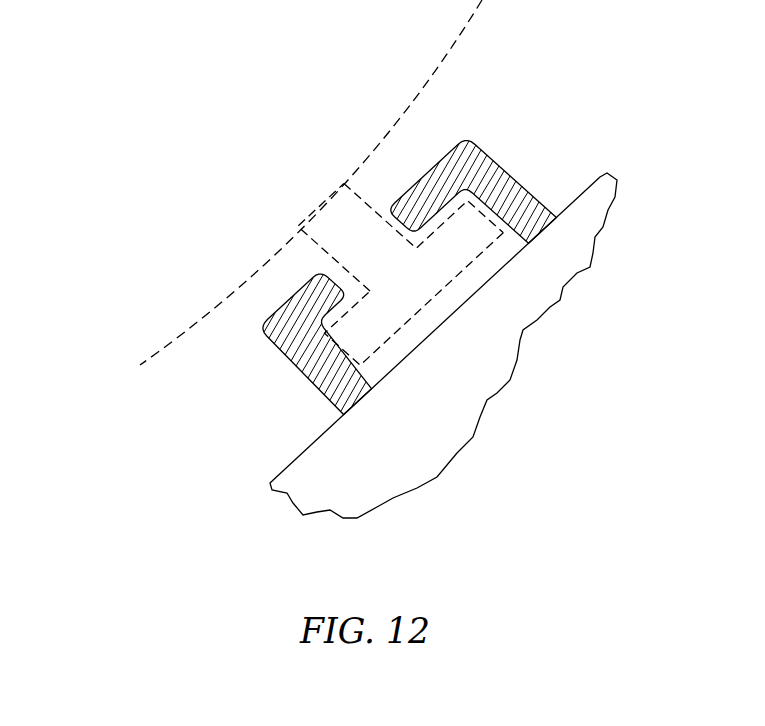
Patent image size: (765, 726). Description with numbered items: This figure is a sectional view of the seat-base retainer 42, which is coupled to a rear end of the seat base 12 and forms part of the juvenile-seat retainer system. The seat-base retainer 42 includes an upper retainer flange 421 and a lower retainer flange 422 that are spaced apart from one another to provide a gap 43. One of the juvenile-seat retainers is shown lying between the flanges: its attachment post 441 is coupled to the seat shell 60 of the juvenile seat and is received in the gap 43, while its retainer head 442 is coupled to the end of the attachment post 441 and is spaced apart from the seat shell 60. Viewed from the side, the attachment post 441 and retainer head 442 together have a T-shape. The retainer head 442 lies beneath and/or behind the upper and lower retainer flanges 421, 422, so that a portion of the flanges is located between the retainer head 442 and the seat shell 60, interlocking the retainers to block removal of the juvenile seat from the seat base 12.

The seat base 12 is at (425, 424).
The seat-base retainer 42 is at (535, 170).
The gap 43 is at (308, 259).
The seat shell 60 is at (177, 332).
The upper retainer flange 421 is at (480, 147).
The lower retainer flange 422 is at (300, 370).
The attachment post 441 is at (372, 215).
The retainer head 442 is at (425, 308).